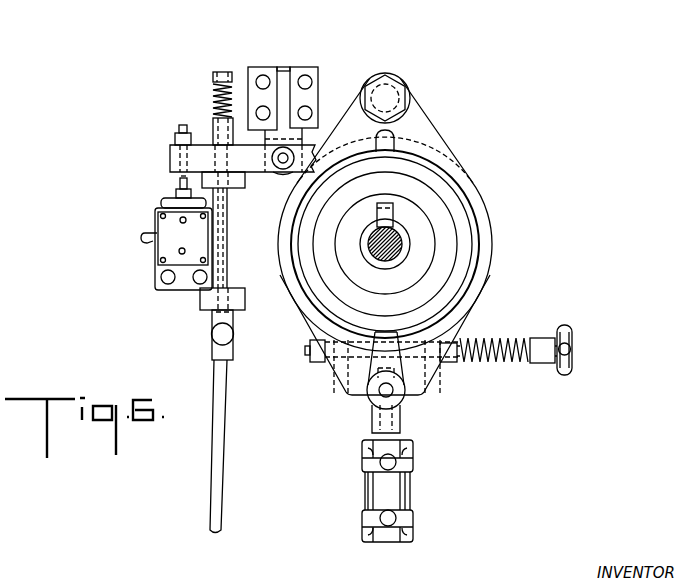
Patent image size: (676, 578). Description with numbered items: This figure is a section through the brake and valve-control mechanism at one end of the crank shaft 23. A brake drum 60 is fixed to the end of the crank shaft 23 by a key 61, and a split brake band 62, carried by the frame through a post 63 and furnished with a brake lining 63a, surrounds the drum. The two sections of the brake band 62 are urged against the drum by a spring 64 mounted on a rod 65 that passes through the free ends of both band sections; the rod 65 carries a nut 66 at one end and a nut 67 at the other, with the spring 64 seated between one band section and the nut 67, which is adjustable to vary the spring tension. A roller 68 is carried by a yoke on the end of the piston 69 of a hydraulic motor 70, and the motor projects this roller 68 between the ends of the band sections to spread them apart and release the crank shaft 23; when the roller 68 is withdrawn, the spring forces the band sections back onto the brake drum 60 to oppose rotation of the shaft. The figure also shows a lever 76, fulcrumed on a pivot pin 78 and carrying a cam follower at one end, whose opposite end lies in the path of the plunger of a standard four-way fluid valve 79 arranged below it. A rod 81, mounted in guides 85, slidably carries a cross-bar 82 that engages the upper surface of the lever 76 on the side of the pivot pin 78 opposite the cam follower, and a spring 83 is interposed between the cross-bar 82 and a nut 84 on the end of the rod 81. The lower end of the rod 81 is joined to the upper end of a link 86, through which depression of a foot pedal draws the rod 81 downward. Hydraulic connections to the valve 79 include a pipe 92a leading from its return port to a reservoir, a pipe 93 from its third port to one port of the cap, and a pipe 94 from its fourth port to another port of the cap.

The crank shaft 23 is at (385, 258).
The brake drum 60 is at (460, 212).
The key 61 is at (393, 212).
The split brake band 62 is at (485, 253).
The post 63 is at (392, 93).
The brake lining 63a is at (473, 223).
The spring 64 is at (487, 338).
The rod 65 is at (493, 355).
The nut 66 is at (315, 358).
The nut 67 is at (565, 370).
The roller 68 is at (404, 399).
The piston 69 is at (375, 420).
The hydraulic motor 70 is at (398, 492).
The lever 76 is at (170, 152).
The pivot pin 78 is at (283, 158).
The four-way fluid valve 79 is at (157, 232).
The rod 81 is at (227, 235).
The cross-bar 82 is at (213, 138).
The spring 83 is at (213, 92).
The nut 84 is at (220, 70).
The guides 85 is at (243, 300).
The link 86 is at (213, 483).
The pipe 92a is at (145, 232).
The pipe 93 is at (193, 228).
The pipe 94 is at (171, 245).